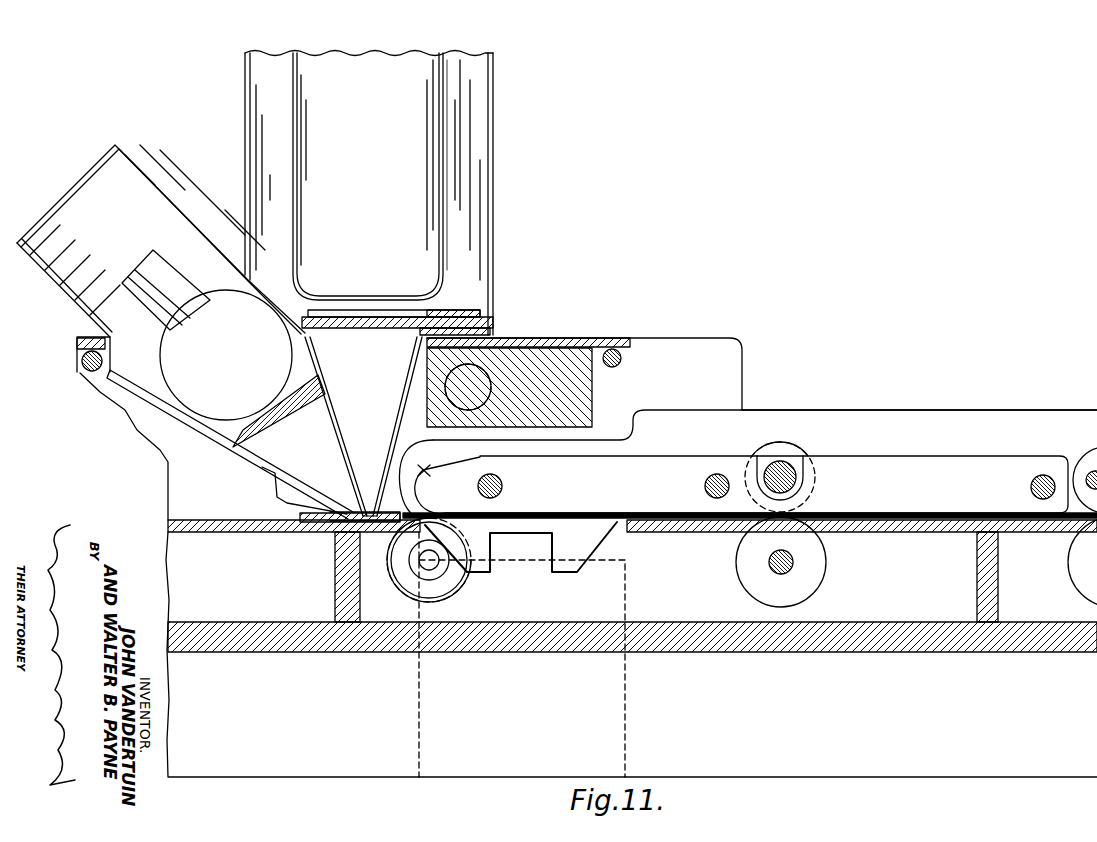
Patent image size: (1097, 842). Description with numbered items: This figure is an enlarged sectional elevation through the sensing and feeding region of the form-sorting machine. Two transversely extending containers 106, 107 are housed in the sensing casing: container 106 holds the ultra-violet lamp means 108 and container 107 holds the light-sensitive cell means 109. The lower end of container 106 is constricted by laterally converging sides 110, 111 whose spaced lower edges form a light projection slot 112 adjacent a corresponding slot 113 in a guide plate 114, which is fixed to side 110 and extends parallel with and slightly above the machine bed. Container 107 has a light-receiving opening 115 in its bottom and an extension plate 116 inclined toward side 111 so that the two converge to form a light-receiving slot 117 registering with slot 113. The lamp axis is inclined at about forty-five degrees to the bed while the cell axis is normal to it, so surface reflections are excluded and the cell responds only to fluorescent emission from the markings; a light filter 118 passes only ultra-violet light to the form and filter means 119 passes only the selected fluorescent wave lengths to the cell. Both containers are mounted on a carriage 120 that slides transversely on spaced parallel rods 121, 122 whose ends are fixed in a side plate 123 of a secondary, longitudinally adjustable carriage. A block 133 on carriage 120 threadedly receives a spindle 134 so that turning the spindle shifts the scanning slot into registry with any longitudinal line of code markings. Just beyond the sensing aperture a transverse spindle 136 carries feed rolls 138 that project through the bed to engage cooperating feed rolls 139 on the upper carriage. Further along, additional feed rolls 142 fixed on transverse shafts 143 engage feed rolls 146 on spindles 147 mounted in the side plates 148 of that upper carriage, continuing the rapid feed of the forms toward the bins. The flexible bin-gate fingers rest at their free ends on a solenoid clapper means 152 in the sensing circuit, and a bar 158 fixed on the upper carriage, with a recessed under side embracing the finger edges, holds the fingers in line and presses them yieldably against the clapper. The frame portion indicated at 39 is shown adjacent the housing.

The frame portion 39 is at (407, 433).
The container 106 is at (187, 232).
The container 107 is at (494, 148).
The ultra-violet lamp means 108 is at (276, 365).
The light-sensitive cell means 109 is at (448, 206).
The converging side 110 is at (208, 433).
The converging side 111 is at (331, 393).
The light projection slot 112 is at (349, 490).
The scanning slot 113 is at (355, 549).
The guide plate 114 is at (276, 483).
The light-receiving opening 115 is at (350, 330).
The extension plate 116 is at (405, 412).
The light-receiving slot 117 is at (366, 505).
The light filter 118 is at (300, 428).
The filter means 119 is at (397, 330).
The carriage 120 is at (562, 338).
The rod 121 is at (622, 358).
The rod 122 is at (80, 361).
The side plate 123 is at (735, 358).
The block 133 is at (582, 388).
The spindle 134 is at (488, 393).
The transverse spindle 136 is at (426, 562).
The feed rolls 138 is at (458, 590).
The feed rolls 139 is at (430, 475).
The feed rolls 142 is at (812, 578).
The transverse shaft 143 is at (778, 574).
The feed rolls 146 is at (800, 451).
The spindle 147 is at (786, 477).
The side plate 148 is at (763, 418).
The solenoid clapper means 152 is at (598, 530).
The bar 158 is at (667, 469).